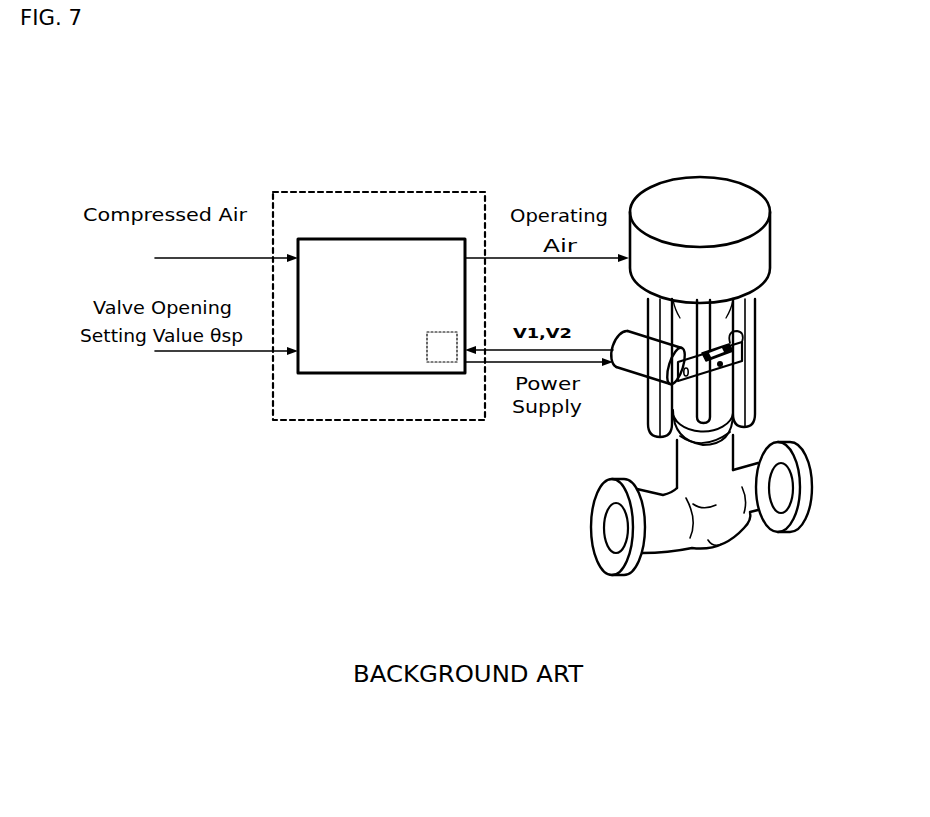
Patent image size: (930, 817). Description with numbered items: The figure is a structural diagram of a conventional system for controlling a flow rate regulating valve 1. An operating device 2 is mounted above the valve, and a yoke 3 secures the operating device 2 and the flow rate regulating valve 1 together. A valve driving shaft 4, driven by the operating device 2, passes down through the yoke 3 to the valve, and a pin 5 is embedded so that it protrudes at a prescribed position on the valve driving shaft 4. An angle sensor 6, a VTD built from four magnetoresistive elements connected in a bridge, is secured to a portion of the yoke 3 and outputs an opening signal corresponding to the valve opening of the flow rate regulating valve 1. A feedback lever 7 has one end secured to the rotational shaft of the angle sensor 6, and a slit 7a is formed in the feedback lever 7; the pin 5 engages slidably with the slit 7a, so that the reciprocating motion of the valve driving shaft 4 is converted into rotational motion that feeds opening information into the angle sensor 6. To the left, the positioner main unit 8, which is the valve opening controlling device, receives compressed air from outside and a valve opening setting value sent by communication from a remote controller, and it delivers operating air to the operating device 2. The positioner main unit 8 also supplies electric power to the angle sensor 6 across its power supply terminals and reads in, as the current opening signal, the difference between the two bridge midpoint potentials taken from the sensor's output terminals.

The flow rate regulating valve 1 is at (727, 540).
The operating device 2 is at (771, 242).
The yoke 3 is at (756, 298).
The valve driving shaft 4 is at (712, 320).
The pin 5 is at (740, 358).
The angle sensor 6 is at (636, 380).
The feedback lever 7 is at (744, 340).
The slit 7a is at (723, 369).
The positioner main unit 8 is at (382, 239).